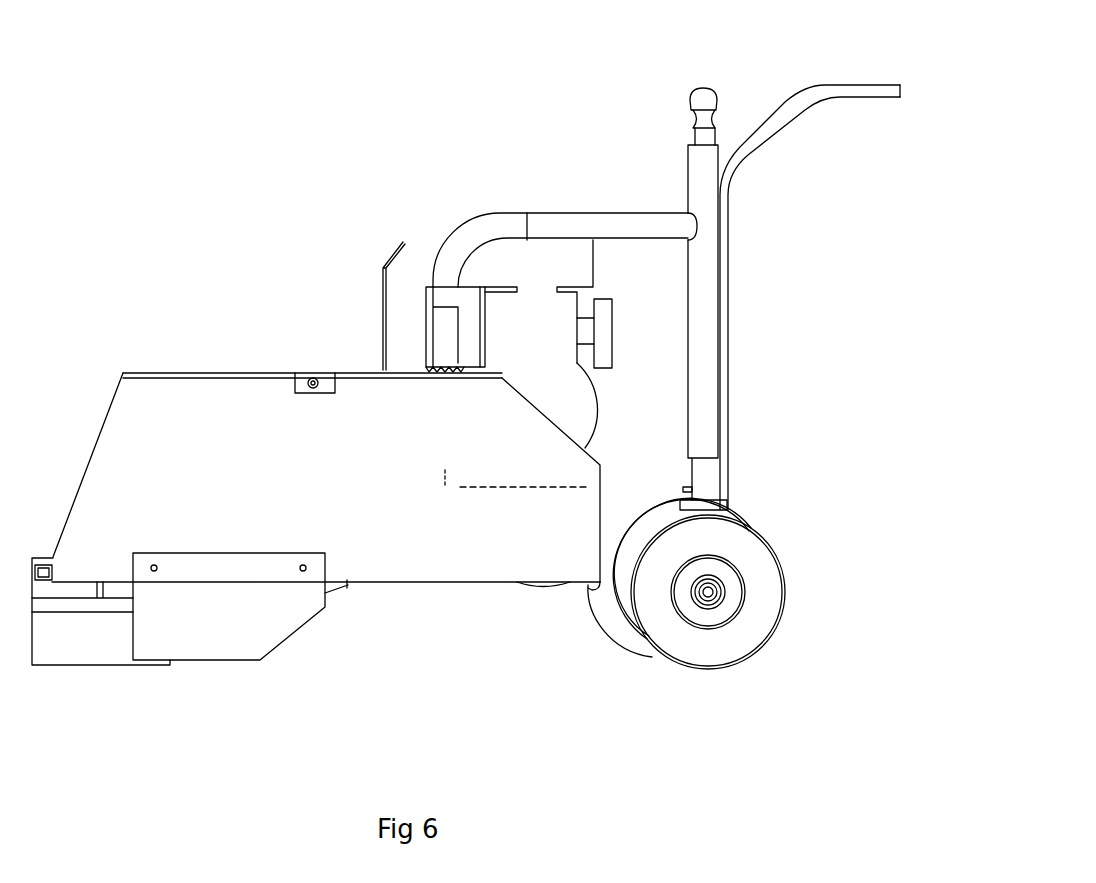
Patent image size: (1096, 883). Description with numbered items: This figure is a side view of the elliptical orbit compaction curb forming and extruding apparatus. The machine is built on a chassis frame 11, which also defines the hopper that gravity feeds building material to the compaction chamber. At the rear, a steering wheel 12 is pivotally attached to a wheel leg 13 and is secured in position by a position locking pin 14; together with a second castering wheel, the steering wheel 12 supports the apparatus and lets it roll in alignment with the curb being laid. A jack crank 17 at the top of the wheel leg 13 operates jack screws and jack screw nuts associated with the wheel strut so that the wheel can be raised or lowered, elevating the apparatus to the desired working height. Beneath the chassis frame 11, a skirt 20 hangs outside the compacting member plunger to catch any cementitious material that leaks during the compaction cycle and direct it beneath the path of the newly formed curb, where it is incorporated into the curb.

The chassis frame 11 is at (237, 432).
The steering wheel 12 is at (767, 603).
The wheel leg 13 is at (703, 352).
The position locking pin 14 is at (448, 363).
The jack crank 17 is at (712, 92).
The skirt 20 is at (270, 633).